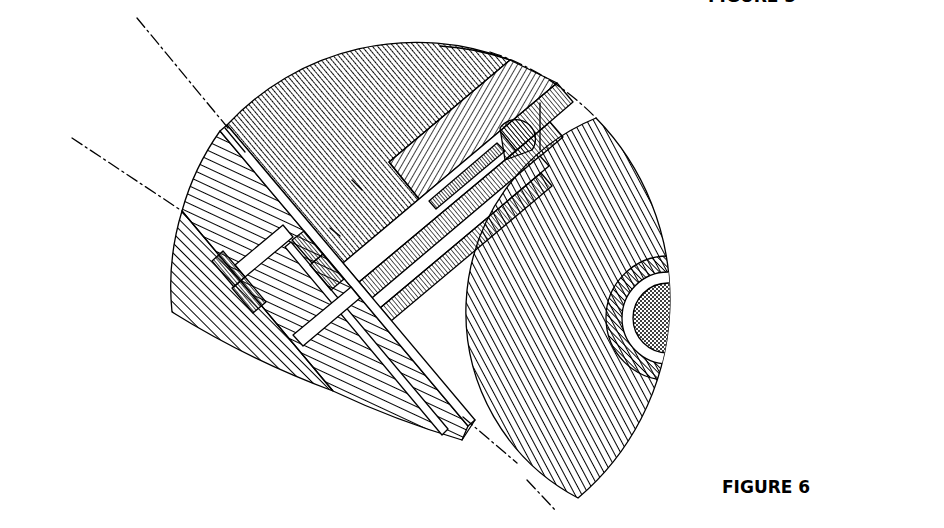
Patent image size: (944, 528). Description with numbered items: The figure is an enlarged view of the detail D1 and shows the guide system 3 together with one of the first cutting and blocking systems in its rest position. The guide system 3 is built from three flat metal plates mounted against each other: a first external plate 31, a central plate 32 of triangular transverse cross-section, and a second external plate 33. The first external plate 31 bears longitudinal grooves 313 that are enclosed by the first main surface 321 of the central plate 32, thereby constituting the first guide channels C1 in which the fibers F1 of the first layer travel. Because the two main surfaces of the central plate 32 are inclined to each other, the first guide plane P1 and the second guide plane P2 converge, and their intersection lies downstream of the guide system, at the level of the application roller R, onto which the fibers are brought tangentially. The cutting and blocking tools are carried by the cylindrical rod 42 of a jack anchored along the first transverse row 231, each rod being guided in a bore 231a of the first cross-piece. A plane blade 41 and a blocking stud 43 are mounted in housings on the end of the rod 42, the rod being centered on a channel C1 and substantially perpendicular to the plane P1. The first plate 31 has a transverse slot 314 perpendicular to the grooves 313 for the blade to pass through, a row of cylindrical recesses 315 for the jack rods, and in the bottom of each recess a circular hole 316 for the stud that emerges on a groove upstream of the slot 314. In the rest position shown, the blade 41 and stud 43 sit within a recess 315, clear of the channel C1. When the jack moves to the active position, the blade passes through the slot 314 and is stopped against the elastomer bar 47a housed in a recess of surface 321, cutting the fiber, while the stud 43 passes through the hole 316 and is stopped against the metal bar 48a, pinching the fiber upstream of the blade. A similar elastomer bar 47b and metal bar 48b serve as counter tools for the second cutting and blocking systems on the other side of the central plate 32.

The guide system 3 is at (396, 425).
The first external plate 31 is at (273, 93).
The longitudinal grooves 313 is at (415, 375).
The transverse slot 314 is at (325, 295).
The cylindrical recesses 315 is at (355, 180).
The circular hole 316 is at (333, 230).
The central plate 32 is at (200, 187).
The first main surface of the central plate 321 is at (372, 360).
The second external plate 33 is at (172, 270).
The plane blade 41 is at (470, 215).
The cylindrical rod 42 is at (533, 82).
The blocking stud 43 is at (363, 200).
The elastomer transverse bar 47a is at (325, 330).
The transverse elastomer bar 47b is at (250, 283).
The metal bar 48a is at (300, 290).
The metal bar 48b is at (212, 283).
The first transverse row 231 is at (460, 55).
The bore 231a is at (532, 140).
The first guide channels C1 is at (253, 133).
The detail D1 is at (570, 90).
The fibers of the first layer F1 is at (243, 152).
The first guide plane P1 is at (333, 256).
The second guide plane P2 is at (281, 293).
The application roller R is at (620, 437).